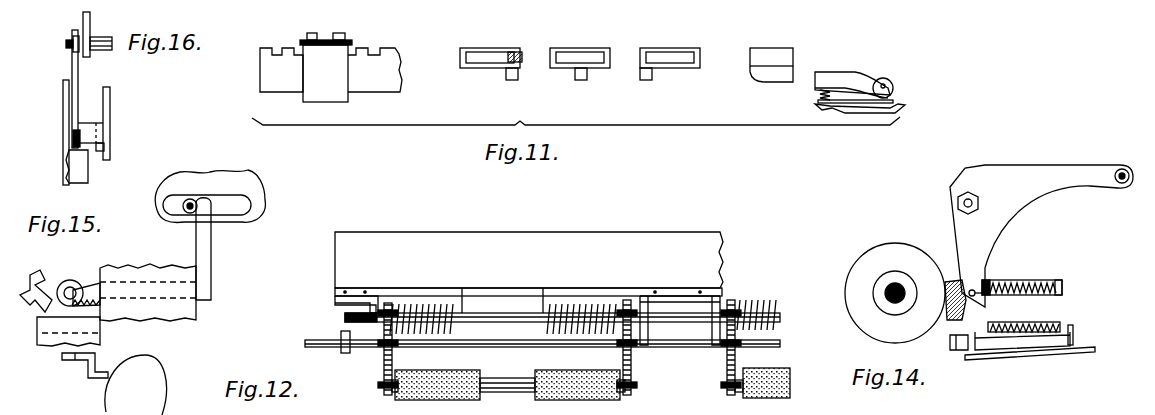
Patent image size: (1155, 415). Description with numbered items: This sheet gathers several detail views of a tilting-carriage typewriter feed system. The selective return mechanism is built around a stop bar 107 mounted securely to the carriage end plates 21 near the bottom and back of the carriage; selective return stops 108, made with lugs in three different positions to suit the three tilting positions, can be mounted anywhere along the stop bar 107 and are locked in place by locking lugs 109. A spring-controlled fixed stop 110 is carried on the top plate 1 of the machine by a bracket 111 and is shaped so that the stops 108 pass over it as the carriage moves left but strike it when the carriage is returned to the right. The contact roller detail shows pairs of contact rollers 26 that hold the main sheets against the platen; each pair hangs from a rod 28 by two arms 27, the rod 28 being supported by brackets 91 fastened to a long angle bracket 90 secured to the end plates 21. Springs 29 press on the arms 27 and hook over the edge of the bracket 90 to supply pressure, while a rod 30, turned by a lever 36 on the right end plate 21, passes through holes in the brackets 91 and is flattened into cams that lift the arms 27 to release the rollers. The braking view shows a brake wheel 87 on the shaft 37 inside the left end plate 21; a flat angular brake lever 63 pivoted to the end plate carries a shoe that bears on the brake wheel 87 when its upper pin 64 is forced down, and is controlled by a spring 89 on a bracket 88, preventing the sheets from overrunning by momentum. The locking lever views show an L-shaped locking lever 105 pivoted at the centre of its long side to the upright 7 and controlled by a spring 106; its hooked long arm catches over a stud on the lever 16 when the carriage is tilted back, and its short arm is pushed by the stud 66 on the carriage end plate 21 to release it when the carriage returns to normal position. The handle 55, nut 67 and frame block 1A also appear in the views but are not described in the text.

In FIG. 16, the handle 55 is at (91, 29).
In FIG. 15, the handle 55 is at (266, 203).
In FIG. 16, the stud 66 is at (66, 44).
In FIG. 15, the stud 66 is at (185, 212).
In FIG. 16, the locking lever 105 is at (80, 76).
In FIG. 15, the locking lever 105 is at (213, 250).
In FIG. 16, the upright 7 is at (63, 100).
In FIG. 15, the upright 7 is at (118, 268).
In FIG. 16, the lever 16 is at (111, 110).
In FIG. 15, the lever 16 is at (46, 276).
In FIG. 16, the spring 106 is at (75, 143).
In FIG. 15, the spring 106 is at (72, 282).
In FIG. 16, the frame block 1A is at (66, 173).
In FIG. 15, the frame block 1A is at (43, 349).
In FIG. 11, the stop bar 107 is at (410, 60).
In FIG. 11, the selective return stops 108 is at (316, 95).
In FIG. 11, the locking lugs 109 is at (352, 42).
In FIG. 11, the fixed stop 110 is at (852, 80).
In FIG. 11, the bracket 111 is at (895, 98).
In FIG. 11, the top plate 1 is at (896, 109).
In FIG. 12, the angle bracket 90 is at (340, 264).
In FIG. 12, the brackets 91 is at (352, 302).
In FIG. 12, the rod 28 is at (345, 318).
In FIG. 12, the springs 29 is at (460, 312).
In FIG. 12, the rod 30 is at (308, 346).
In FIG. 12, the lever 36 is at (343, 354).
In FIG. 12, the arms 27 is at (384, 370).
In FIG. 12, the contact rollers 26 is at (533, 396).
In FIG. 14, the brake wheel 87 is at (898, 248).
In FIG. 14, the shaft 37 is at (890, 298).
In FIG. 14, the brake lever 63 is at (1068, 183).
In FIG. 14, the pin 64 is at (1118, 169).
In FIG. 14, the nut 67 is at (956, 204).
In FIG. 14, the bracket 88 is at (1063, 288).
In FIG. 14, the spring 89 is at (1026, 323).
In FIG. 14, the end plates 21 is at (1008, 358).